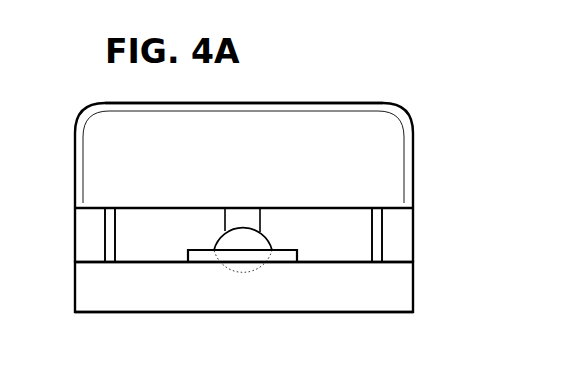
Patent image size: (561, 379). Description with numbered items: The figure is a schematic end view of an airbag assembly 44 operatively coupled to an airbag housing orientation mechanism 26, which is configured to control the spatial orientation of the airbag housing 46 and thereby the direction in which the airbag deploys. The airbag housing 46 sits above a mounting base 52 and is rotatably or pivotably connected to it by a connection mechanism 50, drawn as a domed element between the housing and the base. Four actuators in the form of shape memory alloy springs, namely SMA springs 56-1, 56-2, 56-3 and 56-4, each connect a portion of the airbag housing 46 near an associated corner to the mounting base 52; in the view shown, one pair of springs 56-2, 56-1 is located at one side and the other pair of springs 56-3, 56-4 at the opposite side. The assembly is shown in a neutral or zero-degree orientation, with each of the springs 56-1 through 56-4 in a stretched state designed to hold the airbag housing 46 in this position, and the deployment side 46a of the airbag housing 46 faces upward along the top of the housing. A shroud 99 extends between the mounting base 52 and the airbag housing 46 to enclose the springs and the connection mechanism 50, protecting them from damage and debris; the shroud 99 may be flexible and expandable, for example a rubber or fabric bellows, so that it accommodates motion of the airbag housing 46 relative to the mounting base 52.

The airbag housing orientation mechanism 26 is at (357, 333).
The airbag assembly 44 is at (400, 107).
The airbag housing 46 is at (322, 97).
The deployment side 46a is at (127, 103).
The connection mechanism 50 is at (248, 245).
The mounting base 52 is at (414, 292).
The SMA spring 56-1 is at (110, 235).
The SMA spring 56-2 is at (117, 225).
The SMA spring 56-3 is at (368, 236).
The SMA spring 56-4 is at (377, 235).
The shroud 99 is at (74, 232).